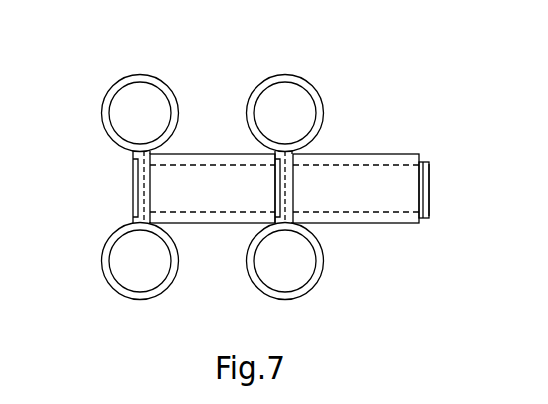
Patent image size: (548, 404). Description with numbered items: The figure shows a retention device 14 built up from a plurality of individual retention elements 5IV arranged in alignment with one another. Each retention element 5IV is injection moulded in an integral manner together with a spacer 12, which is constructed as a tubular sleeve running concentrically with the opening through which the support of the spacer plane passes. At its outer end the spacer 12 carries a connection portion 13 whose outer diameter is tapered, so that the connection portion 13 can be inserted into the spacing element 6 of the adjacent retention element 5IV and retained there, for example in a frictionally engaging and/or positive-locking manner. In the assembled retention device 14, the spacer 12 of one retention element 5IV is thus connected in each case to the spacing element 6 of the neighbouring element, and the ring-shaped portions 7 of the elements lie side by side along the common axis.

The retention element 5IV is at (397, 100).
The tubular elements (rings) 7 is at (252, 90).
The spacing element 6 is at (118, 181).
The spacer 12 is at (205, 198).
The connection portion 13 is at (423, 202).
The retention device 14 is at (442, 187).